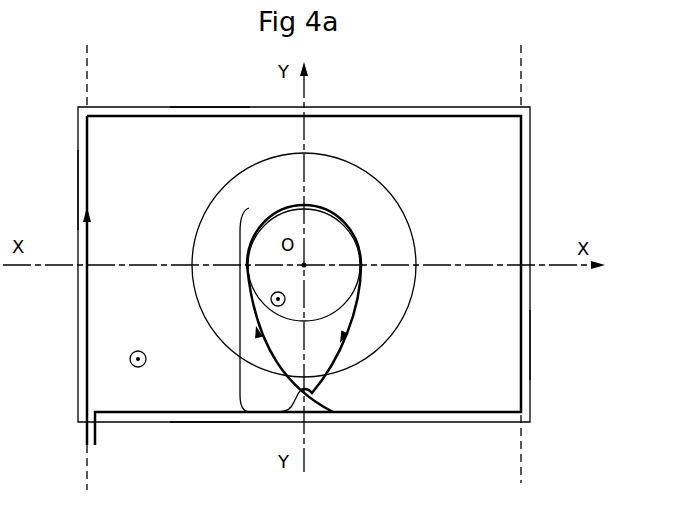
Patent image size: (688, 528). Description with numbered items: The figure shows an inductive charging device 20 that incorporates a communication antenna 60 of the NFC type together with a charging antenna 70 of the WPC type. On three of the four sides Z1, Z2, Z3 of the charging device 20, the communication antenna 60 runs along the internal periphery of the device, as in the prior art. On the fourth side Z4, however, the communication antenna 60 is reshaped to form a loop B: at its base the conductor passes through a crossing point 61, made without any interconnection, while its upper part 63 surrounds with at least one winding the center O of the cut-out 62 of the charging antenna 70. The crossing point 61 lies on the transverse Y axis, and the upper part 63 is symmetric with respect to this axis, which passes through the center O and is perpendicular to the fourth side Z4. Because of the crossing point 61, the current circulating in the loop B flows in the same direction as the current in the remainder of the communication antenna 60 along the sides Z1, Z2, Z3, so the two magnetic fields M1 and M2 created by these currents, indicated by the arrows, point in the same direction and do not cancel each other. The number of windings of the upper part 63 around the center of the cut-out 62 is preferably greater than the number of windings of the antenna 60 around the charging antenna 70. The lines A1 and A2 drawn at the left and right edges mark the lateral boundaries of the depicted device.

The charging device 20 is at (530, 129).
The communication antenna 60 is at (377, 112).
The crossing point 61 is at (313, 421).
The cut-out 62 is at (324, 247).
The upper part 63 is at (355, 227).
The charging antenna 70 is at (379, 172).
The first side Z1 is at (78, 191).
The second side Z2 is at (208, 107).
The third side Z3 is at (531, 346).
The fourth side Z4 is at (203, 422).
The section line A1 is at (89, 280).
The section line A2 is at (520, 277).
The loop B is at (240, 312).
The magnetic field M1 is at (142, 350).
The magnetic field M2 is at (282, 291).